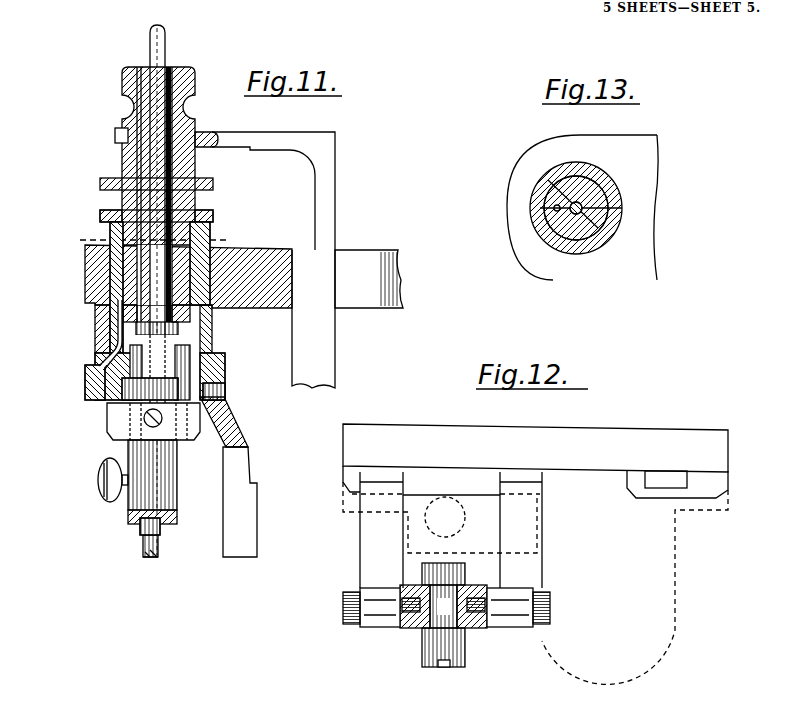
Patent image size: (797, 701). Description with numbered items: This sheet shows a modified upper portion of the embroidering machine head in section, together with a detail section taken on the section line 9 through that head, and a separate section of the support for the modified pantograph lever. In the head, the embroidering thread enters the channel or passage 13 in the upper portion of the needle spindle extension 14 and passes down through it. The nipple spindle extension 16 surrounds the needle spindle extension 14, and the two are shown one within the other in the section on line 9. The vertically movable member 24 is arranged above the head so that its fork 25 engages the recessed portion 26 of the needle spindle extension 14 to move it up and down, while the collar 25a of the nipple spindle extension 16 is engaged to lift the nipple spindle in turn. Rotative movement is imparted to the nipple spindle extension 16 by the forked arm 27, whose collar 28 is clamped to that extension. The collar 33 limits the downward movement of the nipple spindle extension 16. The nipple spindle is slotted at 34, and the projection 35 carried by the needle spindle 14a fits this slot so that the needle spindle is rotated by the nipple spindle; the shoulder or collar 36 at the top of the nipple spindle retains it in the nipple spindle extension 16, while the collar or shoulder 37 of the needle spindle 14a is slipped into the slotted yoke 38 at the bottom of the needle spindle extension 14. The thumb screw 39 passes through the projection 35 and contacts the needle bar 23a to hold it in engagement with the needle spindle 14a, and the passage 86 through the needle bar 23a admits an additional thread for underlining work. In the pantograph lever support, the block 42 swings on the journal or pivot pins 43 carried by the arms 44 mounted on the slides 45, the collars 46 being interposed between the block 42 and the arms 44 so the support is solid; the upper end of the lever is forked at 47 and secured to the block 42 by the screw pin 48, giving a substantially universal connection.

In FIG. 11, the section line 9- 9 is at (153, 241).
In FIG. 11, the channel or passage 13 is at (141, 70).
In FIG. 13, the channel or passage 13 is at (540, 208).
In FIG. 11, the needle spindle extension 14 is at (193, 166).
In FIG. 13, the needle spindle extension 14 is at (566, 238).
In FIG. 11, the needle spindle 14a is at (112, 360).
In FIG. 11, the nipple spindle extension 16 is at (208, 360).
In FIG. 13, the nipple spindle extension 16 is at (580, 208).
In FIG. 11, the needle bar 23a is at (213, 204).
In FIG. 13, the needle bar 23a is at (558, 195).
In FIG. 11, the vertically movable member 24 is at (244, 260).
In FIG. 11, the fork 25 is at (112, 136).
In FIG. 11, the collar 25a is at (112, 200).
In FIG. 11, the recessed portion 26 is at (204, 136).
In FIG. 11, the forked arm 27 is at (245, 452).
In FIG. 11, the collar 28 is at (84, 382).
In FIG. 11, the collar 33 is at (153, 421).
In FIG. 11, the slot 34 is at (140, 522).
In FIG. 11, the projection 35 is at (130, 452).
In FIG. 11, the shoulder or collar 36 is at (110, 405).
In FIG. 11, the collar or shoulder 37 is at (117, 331).
In FIG. 11, the slotted yoke 38 is at (182, 332).
In FIG. 11, the thumb screw 39 is at (103, 480).
In FIG. 11, the passage 86 is at (150, 28).
In FIG. 13, the passage 86 is at (622, 208).
In FIG. 12, the block 42 is at (472, 586).
In FIG. 12, the journal or pivot pins 43 is at (402, 600).
In FIG. 12, the arms 44 is at (451, 530).
In FIG. 12, the slides 45 is at (451, 475).
In FIG. 12, the collars 46 is at (352, 624).
In FIG. 12, the forked portion 47 is at (424, 566).
In FIG. 12, the screw pin 48 is at (443, 606).